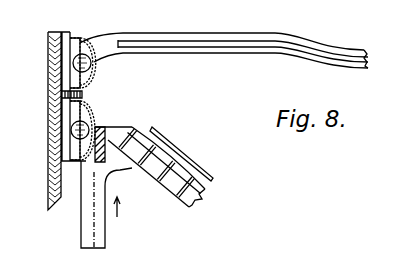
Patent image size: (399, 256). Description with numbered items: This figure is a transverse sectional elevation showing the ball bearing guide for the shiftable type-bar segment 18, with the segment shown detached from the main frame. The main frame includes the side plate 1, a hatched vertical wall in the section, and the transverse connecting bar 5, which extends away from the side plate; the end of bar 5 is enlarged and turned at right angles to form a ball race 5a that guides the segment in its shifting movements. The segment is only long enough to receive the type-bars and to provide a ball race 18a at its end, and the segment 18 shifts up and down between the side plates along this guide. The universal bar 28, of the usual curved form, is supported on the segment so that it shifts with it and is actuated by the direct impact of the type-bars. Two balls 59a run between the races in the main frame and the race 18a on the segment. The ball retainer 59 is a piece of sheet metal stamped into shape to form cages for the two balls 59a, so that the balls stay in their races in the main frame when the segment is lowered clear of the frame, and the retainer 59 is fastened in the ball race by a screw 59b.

The side plate 1 is at (47, 171).
The transverse connecting bar 5 is at (175, 31).
The ball race 5a is at (74, 40).
The type-bar segment 18 is at (200, 190).
The ball race 18a is at (82, 163).
The universal bar 28 is at (190, 158).
The ball retainer 59 is at (85, 111).
The balls 59a is at (73, 124).
The screw 59b is at (83, 97).